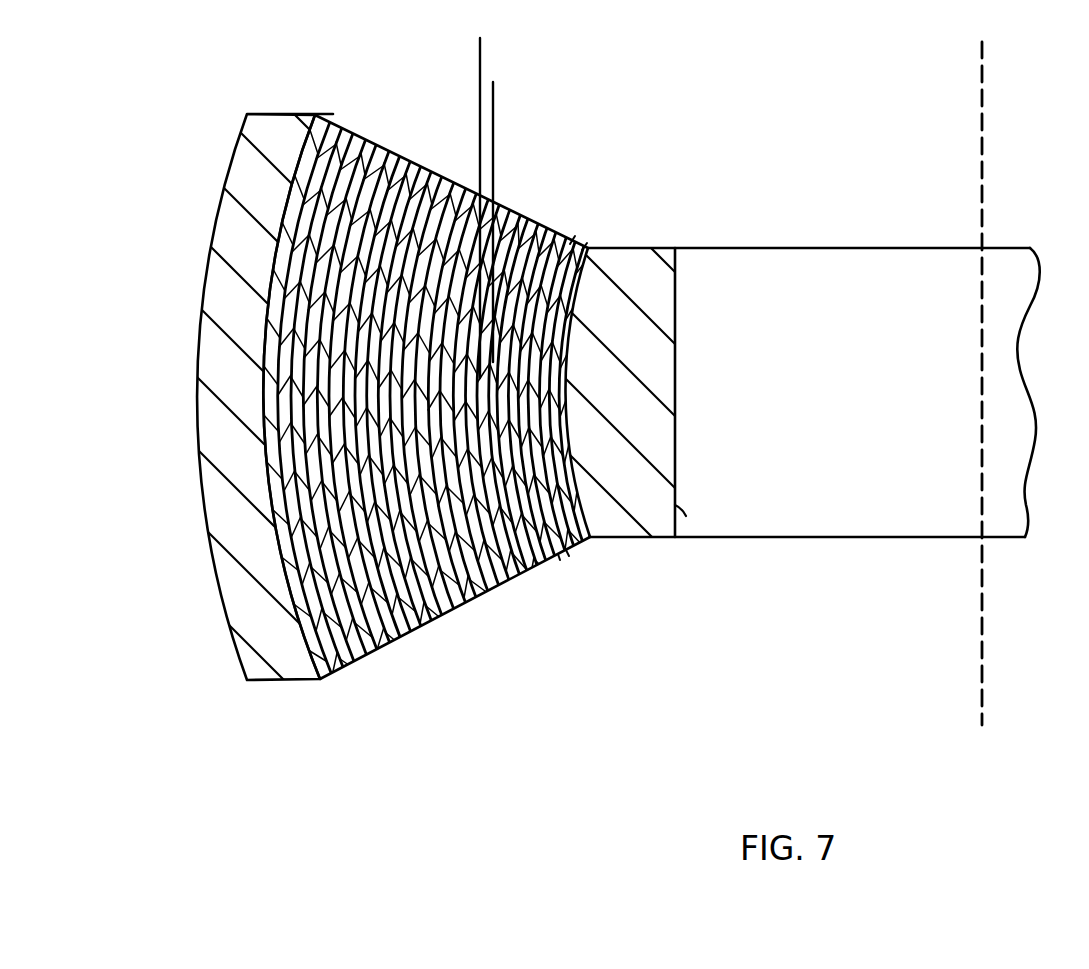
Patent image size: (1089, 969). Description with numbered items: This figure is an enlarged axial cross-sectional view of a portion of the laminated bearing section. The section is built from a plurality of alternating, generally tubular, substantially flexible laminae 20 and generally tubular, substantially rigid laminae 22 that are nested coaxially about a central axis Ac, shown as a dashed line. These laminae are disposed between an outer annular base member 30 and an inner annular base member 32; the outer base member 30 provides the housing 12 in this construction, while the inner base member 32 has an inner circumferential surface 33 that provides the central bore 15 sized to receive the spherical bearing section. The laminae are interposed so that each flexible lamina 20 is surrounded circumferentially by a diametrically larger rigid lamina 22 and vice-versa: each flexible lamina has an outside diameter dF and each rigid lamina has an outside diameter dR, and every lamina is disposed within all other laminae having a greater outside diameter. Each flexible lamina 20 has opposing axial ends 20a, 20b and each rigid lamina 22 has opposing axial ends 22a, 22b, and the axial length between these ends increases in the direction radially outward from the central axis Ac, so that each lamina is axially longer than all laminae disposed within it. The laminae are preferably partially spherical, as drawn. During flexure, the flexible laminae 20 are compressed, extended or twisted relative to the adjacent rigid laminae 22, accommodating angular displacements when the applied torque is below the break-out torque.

The housing 12 is at (174, 538).
The central bore 15 is at (785, 263).
The flexible laminae 20 is at (328, 672).
The rigid laminae 22 is at (387, 637).
The axial end of flexible lamina 20a is at (565, 242).
The axial end of rigid lamina 22a is at (553, 238).
The axial end of flexible lamina 20b is at (567, 557).
The axial end of rigid lamina 22b is at (558, 557).
The outer annular base member 30 is at (244, 643).
The inner annular base member 32 is at (633, 538).
The inner circumferential surface 33 is at (677, 507).
The central axis Ac is at (983, 53).
The outside diameter of rigid lamina dR is at (480, 52).
The outside diameter of flexible lamina dF is at (493, 98).